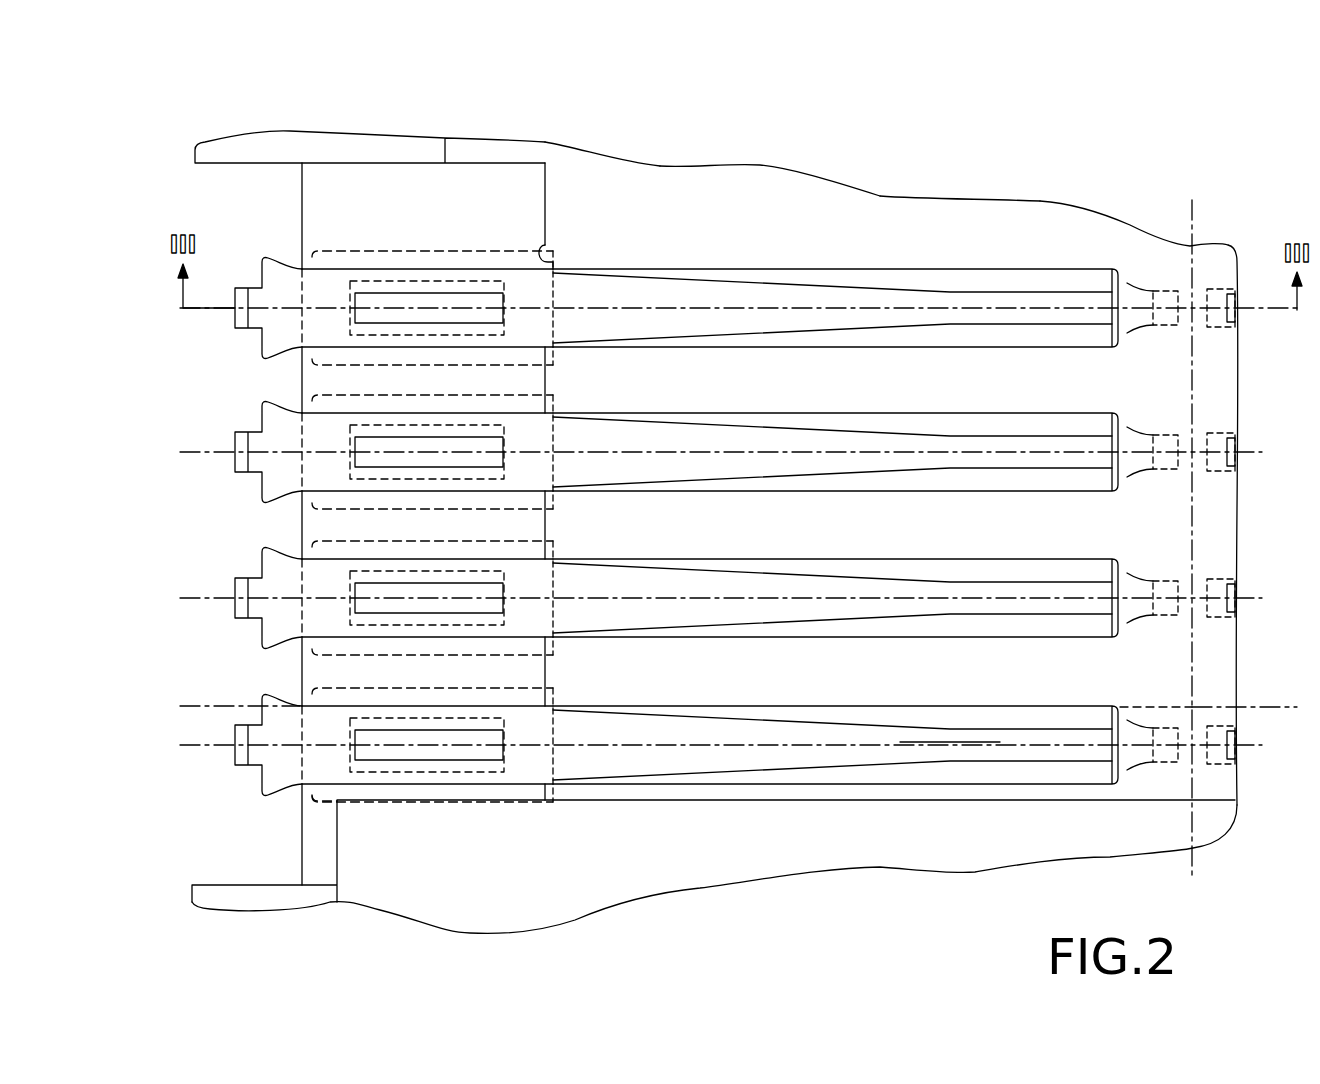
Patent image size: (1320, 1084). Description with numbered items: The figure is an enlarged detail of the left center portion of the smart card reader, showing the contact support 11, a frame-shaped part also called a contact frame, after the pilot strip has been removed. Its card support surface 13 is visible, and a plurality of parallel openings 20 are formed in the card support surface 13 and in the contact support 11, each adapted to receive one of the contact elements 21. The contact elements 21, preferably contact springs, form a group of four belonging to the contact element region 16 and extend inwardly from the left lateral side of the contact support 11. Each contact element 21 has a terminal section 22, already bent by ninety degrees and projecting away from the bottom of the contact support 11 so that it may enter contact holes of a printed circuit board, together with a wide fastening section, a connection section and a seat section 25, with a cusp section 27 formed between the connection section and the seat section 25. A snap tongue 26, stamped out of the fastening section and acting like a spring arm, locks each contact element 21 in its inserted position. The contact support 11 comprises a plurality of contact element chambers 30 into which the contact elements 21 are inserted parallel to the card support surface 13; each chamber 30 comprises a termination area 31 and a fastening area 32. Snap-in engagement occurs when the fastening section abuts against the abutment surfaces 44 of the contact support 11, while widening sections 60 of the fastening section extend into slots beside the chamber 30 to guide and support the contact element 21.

The contact support 11 is at (714, 502).
The card support surface 13 is at (676, 175).
The contact element region 16 is at (873, 220).
The opening 20 is at (740, 428).
The contact element 21 is at (658, 293).
The terminal section 22 is at (236, 334).
The seat section 25 is at (1170, 290).
The snap tongue 26 is at (456, 754).
The cusp section 27 is at (948, 748).
The contact element chamber 30 is at (808, 266).
The termination area 31 is at (250, 238).
The fastening area 32 is at (378, 251).
The abutment surface 44 is at (546, 247).
The widening section 60 is at (466, 250).